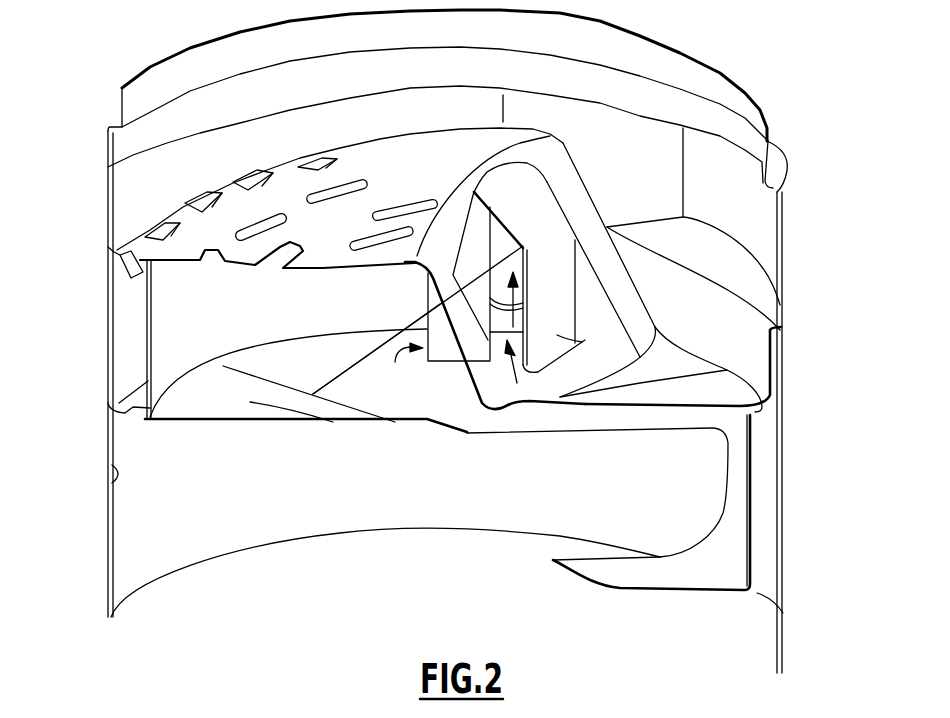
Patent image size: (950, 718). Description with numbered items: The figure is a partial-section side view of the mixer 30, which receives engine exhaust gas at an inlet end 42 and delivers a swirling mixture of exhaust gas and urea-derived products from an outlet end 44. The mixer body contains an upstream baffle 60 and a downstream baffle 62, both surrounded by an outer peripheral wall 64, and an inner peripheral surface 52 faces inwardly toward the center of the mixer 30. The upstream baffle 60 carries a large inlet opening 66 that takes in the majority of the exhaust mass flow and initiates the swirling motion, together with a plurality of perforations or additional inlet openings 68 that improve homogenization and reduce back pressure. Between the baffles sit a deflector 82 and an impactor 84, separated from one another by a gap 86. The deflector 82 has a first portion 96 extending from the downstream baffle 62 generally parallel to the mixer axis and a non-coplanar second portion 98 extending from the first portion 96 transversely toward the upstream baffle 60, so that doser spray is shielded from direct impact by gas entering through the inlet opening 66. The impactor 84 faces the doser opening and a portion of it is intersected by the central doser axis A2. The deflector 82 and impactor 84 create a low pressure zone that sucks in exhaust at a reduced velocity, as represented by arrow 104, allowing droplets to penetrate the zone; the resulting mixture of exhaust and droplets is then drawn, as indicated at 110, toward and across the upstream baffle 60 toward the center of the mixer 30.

The mixer 30 is at (459, 341).
The inlet end 42 is at (745, 78).
The outlet end 44 is at (782, 661).
The inner peripheral surface 52 is at (111, 481).
The upstream baffle 60 is at (190, 247).
The downstream baffle 62 is at (237, 422).
The outer peripheral wall 64 is at (111, 421).
The large inlet opening 66 is at (617, 310).
The additional inlet openings 68 is at (402, 212).
The deflector 82 is at (580, 348).
The impactor 84 is at (442, 348).
The gap 86 is at (517, 384).
The first portion 96 is at (555, 262).
The second portion 98 is at (527, 203).
The arrow indicating sucked exhaust flow 104 is at (410, 367).
The arrow indicating mixture flow 110 is at (540, 297).
The central doser axis A2 is at (360, 362).